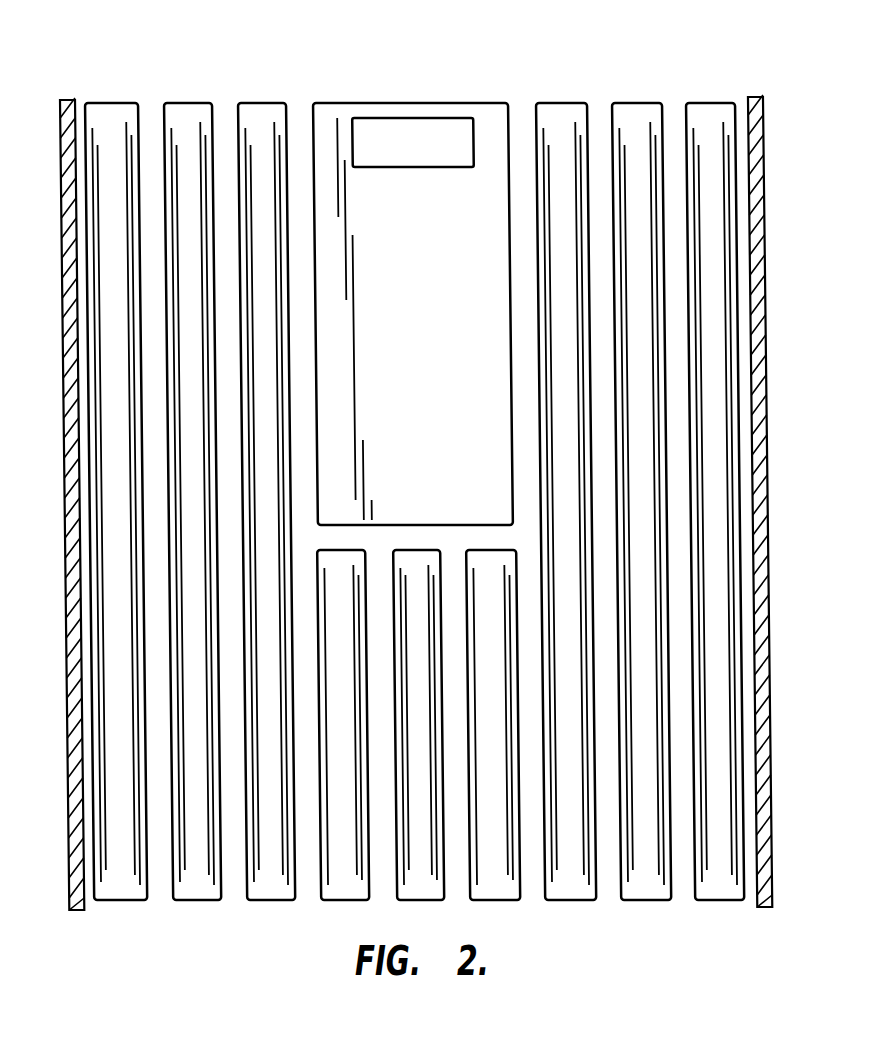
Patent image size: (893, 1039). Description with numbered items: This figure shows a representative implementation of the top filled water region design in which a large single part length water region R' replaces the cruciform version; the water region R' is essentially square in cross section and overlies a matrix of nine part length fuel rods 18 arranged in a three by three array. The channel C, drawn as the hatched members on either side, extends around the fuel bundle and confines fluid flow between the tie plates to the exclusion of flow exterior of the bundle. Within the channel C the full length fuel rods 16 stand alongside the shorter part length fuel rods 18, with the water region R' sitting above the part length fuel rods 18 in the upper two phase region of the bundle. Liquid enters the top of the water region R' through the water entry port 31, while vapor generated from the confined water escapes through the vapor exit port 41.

The channel C is at (65, 449).
The full length fuel rods 16 is at (738, 367).
The part length fuel rods 18 is at (352, 746).
The water entry port 31 is at (447, 147).
The vapor exit port 41 is at (417, 296).
The top filled water region R' is at (413, 314).